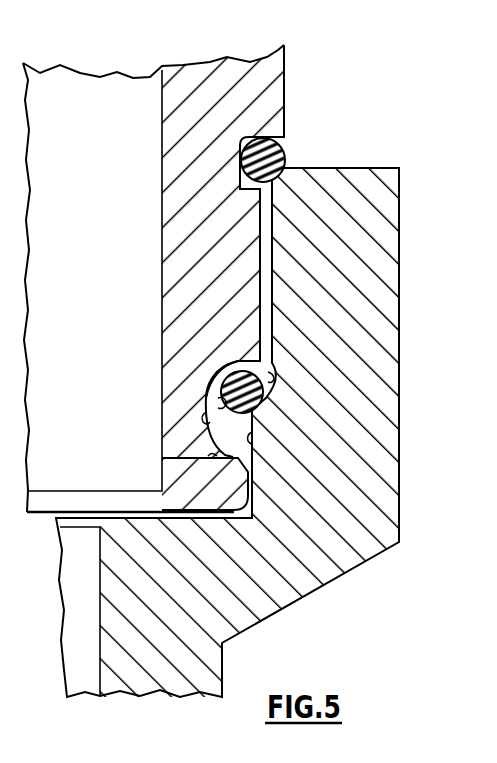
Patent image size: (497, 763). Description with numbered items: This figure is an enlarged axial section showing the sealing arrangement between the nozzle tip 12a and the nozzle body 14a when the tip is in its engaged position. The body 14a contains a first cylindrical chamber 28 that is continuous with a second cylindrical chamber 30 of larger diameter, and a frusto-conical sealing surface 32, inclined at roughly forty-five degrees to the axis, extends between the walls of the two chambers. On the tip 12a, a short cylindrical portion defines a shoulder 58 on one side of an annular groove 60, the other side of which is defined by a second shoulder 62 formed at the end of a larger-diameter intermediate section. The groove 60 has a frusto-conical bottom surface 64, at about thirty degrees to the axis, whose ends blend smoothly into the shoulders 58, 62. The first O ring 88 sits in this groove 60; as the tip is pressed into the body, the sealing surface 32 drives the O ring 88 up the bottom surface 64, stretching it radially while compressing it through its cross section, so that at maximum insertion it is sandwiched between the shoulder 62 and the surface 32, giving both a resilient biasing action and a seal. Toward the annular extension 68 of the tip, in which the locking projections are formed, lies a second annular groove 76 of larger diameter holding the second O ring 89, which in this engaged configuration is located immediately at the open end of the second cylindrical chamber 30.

The nozzle tip 12a is at (180, 66).
The nozzle body 14a is at (315, 583).
The annular extension 68 is at (287, 62).
The second O ring 89 is at (250, 137).
The second cylindrical chamber 30 is at (292, 176).
The second annular groove 76 is at (240, 178).
The first O ring 88 is at (242, 353).
The second shoulder 62 is at (248, 366).
The annular groove 60 is at (222, 405).
The frusto-conical bottom surface 64 is at (197, 427).
The shoulder 58 is at (233, 458).
The frusto-conical sealing surface 32 is at (275, 377).
The first cylindrical chamber 28 is at (250, 440).